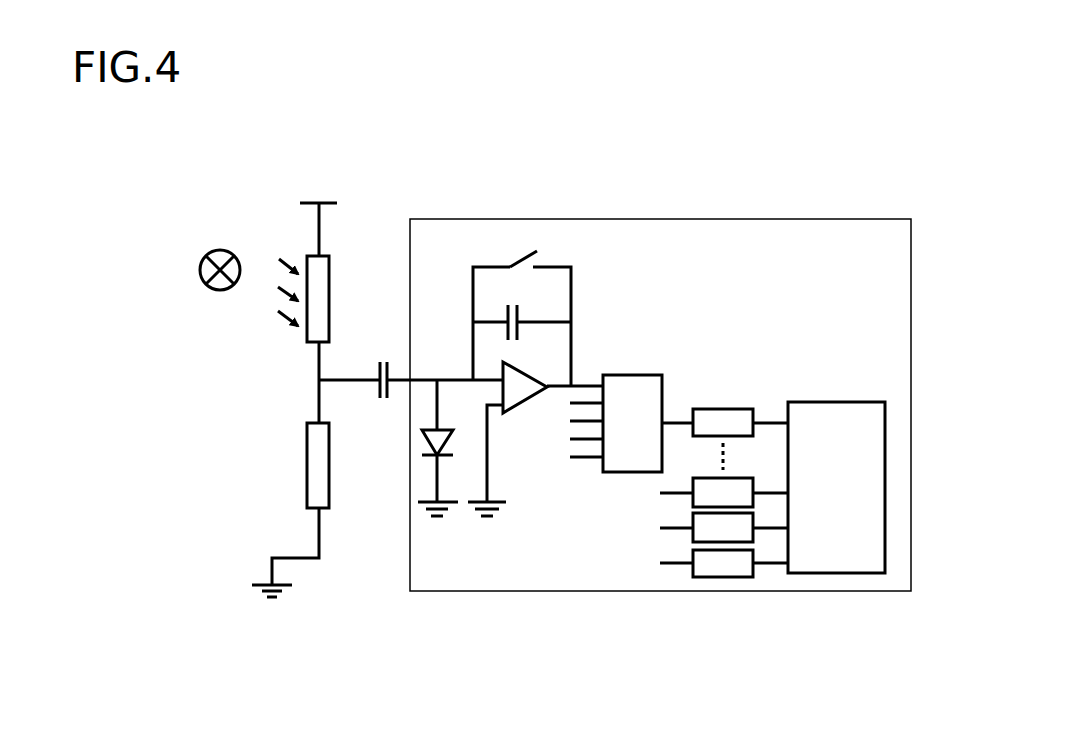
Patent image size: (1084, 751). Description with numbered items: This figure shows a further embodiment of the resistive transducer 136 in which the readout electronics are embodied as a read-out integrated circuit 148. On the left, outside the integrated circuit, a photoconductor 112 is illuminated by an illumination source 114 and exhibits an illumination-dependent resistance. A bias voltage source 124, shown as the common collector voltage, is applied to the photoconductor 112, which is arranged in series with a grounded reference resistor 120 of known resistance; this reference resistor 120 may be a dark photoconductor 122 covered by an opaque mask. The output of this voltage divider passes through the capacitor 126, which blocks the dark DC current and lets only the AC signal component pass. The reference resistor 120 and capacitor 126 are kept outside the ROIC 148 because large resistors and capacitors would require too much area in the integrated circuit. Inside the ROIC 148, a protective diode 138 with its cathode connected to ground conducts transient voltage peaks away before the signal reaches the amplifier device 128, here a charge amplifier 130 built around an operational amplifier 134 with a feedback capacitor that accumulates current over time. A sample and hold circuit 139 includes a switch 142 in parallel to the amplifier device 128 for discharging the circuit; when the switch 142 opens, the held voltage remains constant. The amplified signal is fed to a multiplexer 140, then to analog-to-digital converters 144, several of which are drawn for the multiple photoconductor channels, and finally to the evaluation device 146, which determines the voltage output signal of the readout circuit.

The photoconductor 112 is at (340, 270).
The illumination source 114 is at (196, 260).
The reference resistor 120 is at (303, 500).
The dark photoconductor 122 is at (271, 509).
The bias voltage source 124 is at (337, 145).
The capacitor 126 is at (384, 353).
The amplifier device 128 is at (501, 304).
The charge amplifier 130 is at (583, 351).
The operational amplifier 134 is at (535, 473).
The resistive transducer 136 is at (811, 86).
The diode 138 is at (420, 445).
The sample and hold circuit 139 is at (587, 261).
The multiplexer 140 is at (631, 423).
The switch 142 is at (520, 244).
The analog-to-digital converter 144 is at (725, 409).
The evaluation device 146 is at (836, 487).
The read-out integrated circuit 148 is at (785, 219).